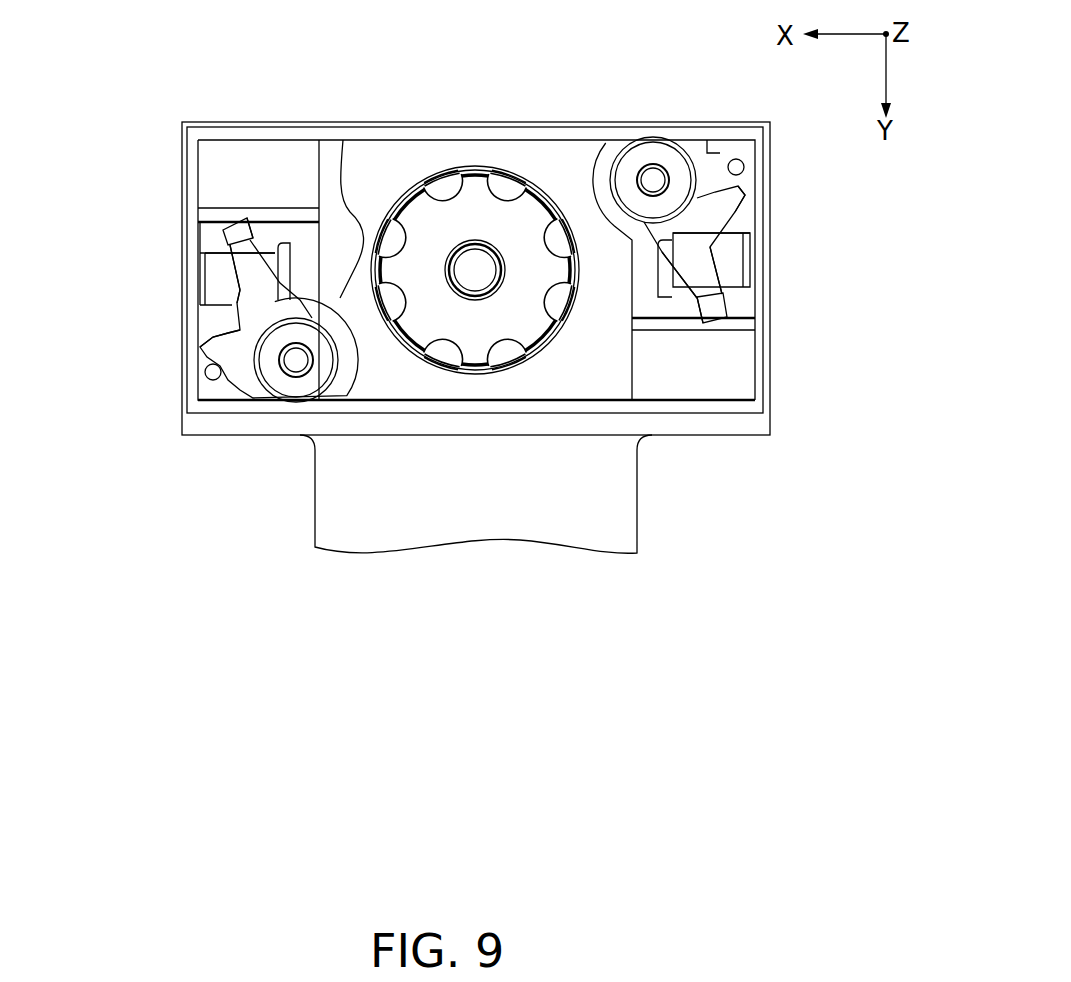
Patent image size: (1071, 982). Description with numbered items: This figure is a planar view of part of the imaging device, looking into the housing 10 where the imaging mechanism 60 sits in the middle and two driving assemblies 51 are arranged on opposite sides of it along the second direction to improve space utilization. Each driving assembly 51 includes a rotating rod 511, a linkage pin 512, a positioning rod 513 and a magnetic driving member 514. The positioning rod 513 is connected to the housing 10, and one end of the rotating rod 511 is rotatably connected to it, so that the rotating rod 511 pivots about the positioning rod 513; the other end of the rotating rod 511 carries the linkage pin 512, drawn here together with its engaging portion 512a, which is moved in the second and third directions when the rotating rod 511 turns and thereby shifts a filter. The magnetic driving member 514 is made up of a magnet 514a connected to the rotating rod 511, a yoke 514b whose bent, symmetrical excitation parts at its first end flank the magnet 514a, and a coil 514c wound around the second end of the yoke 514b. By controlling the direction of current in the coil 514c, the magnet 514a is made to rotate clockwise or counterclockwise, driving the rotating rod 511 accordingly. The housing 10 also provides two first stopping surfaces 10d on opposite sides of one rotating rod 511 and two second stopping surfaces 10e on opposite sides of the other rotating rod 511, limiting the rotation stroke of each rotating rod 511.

The housing 10 is at (281, 122).
The first stopping surfaces 10d is at (756, 193).
The second stopping surfaces 10e is at (343, 140).
The imaging mechanism 60 is at (468, 183).
The driving assembly 51 is at (716, 150).
The rotating rod 511 is at (683, 213).
The linkage pin 512 is at (235, 228).
The engaging surface 512a is at (475, 270).
The positioning rod 513 is at (651, 180).
The magnetic driving member 514 is at (84, 238).
The magnet 514a is at (238, 336).
The yoke 514b is at (240, 252).
The coil 514c is at (220, 297).